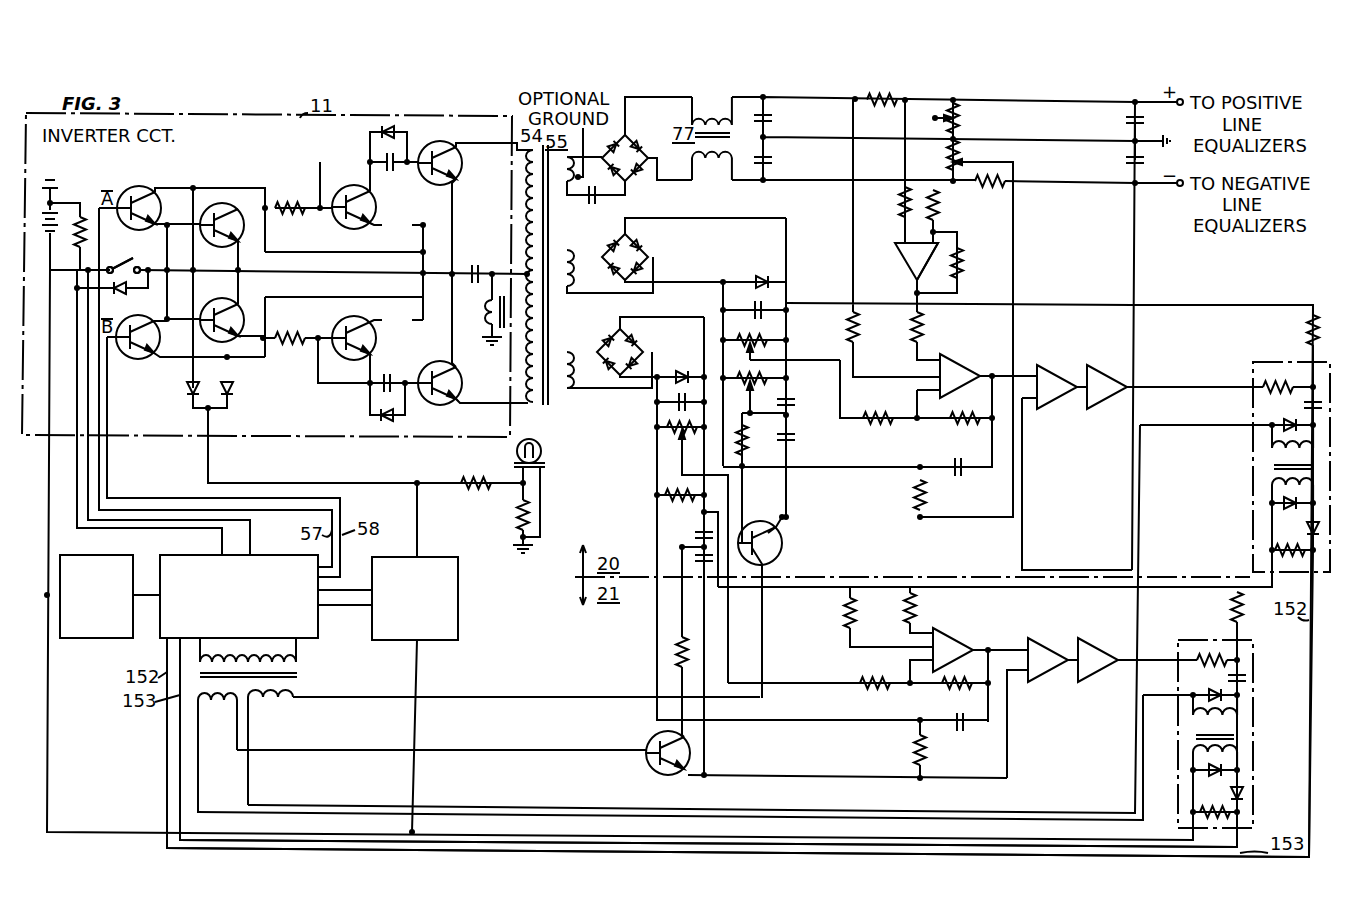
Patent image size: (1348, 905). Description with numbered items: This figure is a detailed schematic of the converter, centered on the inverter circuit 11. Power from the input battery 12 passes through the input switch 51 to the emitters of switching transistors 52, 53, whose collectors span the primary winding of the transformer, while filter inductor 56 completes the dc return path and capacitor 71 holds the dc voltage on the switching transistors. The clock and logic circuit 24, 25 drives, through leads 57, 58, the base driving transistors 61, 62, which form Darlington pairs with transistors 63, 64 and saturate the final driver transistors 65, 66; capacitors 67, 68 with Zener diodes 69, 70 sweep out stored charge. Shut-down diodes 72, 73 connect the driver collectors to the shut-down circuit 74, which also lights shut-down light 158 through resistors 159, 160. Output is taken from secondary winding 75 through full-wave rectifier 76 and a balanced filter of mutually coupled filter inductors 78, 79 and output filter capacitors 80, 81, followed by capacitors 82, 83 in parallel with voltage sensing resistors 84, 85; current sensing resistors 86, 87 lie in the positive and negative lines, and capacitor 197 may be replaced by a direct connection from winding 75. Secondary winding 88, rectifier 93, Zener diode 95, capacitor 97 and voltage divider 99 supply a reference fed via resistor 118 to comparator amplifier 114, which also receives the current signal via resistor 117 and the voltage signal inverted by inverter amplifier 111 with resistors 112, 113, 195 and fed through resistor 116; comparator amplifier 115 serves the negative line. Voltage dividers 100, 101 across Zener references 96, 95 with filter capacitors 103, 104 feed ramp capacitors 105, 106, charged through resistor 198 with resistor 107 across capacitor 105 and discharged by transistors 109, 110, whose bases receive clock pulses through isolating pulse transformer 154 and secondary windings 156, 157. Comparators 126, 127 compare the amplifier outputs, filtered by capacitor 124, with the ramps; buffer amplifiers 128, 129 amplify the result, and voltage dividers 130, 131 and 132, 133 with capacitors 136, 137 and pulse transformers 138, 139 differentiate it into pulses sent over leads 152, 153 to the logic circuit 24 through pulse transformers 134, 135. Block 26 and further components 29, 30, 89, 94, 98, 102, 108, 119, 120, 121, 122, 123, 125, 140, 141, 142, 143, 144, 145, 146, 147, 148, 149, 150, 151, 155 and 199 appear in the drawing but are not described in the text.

The inverter circuit 11 is at (537, 275).
The input battery 12 is at (42, 228).
The logic circuit 24 is at (205, 556).
The clock 25 is at (239, 596).
The soft start circuit 26 is at (98, 640).
The resistor 29 is at (82, 210).
The diode 30 is at (126, 296).
The input switch 51 is at (118, 265).
The switching transistor 52 is at (463, 163).
The switching transistor 53 is at (436, 406).
The filter inductor 56 is at (477, 322).
The lead 57 is at (215, 538).
The lead 58 is at (243, 537).
The transistor 61 is at (144, 186).
The transistor 62 is at (150, 360).
The transistor 63 is at (230, 204).
The transistor 64 is at (228, 300).
The final driver transistor 65 is at (380, 208).
The final driver transistor 66 is at (380, 340).
The capacitor 67 is at (392, 170).
The capacitor 68 is at (393, 370).
The Zener diode 69 is at (382, 130).
The Zener diode 70 is at (380, 418).
The capacitor 71 is at (480, 265).
The shut-down diode 72 is at (185, 394).
The shut-down diode 73 is at (236, 394).
The shut-down circuit 74 is at (458, 628).
The secondary winding 75 is at (572, 190).
The full-wave rectifier 76 is at (630, 140).
The filter inductor 78 is at (712, 108).
The filter inductor 79 is at (712, 175).
The output filter capacitor 80 is at (772, 118).
The output filter capacitor 81 is at (772, 160).
The capacitor 82 is at (1125, 120).
The capacitor 83 is at (1125, 160).
The output voltage sensing resistor 84 is at (965, 120).
The output voltage sensing resistor 85 is at (965, 155).
The positive line current sensing resistor 86 is at (880, 108).
The current sensing resistor 87 is at (992, 190).
The secondary winding 88 is at (573, 287).
The secondary winding 89 is at (576, 383).
The full-wave rectifier 93 is at (645, 250).
The rectifier bridge 94 is at (638, 343).
The Zener diode 95 is at (762, 276).
The Zener diode reference 96 is at (694, 362).
The capacitor 97 is at (750, 308).
The capacitor 98 is at (665, 400).
The voltage divider 99 is at (776, 336).
The voltage divider 100 is at (668, 430).
The voltage divider 101 is at (776, 380).
The resistor 102 is at (668, 490).
The filter capacitor 103 is at (795, 402).
The filter capacitor 104 is at (690, 525).
The capacitor 105 is at (795, 437).
The capacitor 106 is at (690, 558).
The resistor 107 is at (752, 445).
The resistor 108 is at (670, 655).
The transistor 109 is at (782, 550).
The transistor 110 is at (648, 770).
The inverter amplifier 111 is at (906, 262).
The resistor 112 is at (898, 205).
The resistor 113 is at (942, 210).
The comparator amplifier 114 is at (960, 365).
The comparator amplifier 115 is at (953, 635).
The resistor 116 is at (925, 318).
The resistor 117 is at (860, 320).
The resistor 118 is at (895, 408).
The resistor 119 is at (904, 605).
The resistor 120 is at (843, 612).
The resistor 121 is at (866, 678).
The resistor 122 is at (958, 425).
The resistor 123 is at (948, 690).
The filter capacitor 124 is at (960, 478).
The capacitor 125 is at (960, 733).
The comparator 126 is at (1062, 368).
The comparator 127 is at (1048, 680).
The buffer amplifier 128 is at (1102, 410).
The buffer amplifier 129 is at (1097, 680).
The voltage divider 130 is at (1300, 324).
The voltage divider 131 is at (1262, 382).
The voltage divider 132 is at (1228, 606).
The voltage divider 133 is at (1197, 658).
The pulse transformer 134 is at (1278, 362).
The pulse transformer 135 is at (1188, 640).
The capacitor 136 is at (1295, 408).
The capacitor 137 is at (1245, 675).
The pulse transformer 138 is at (1272, 466).
The pulse transformer 139 is at (1240, 735).
The primary winding 140 is at (1272, 452).
The secondary winding 141 is at (1272, 485).
The diode 142 is at (1275, 432).
The diode 143 is at (1280, 508).
The zener diode 144 is at (1300, 532).
The resistor 145 is at (1278, 555).
The primary winding 146 is at (1240, 710).
The secondary winding 147 is at (1238, 750).
The diode 148 is at (1205, 690).
The diode 149 is at (1222, 764).
The zener diode 150 is at (1245, 795).
The resistor 151 is at (1205, 808).
The lead 152 is at (740, 581).
The lead 153 is at (708, 742).
The isolating pulse transformer 154 is at (332, 691).
The primary winding 155 is at (300, 660).
The secondary winding 156 is at (218, 700).
The secondary winding 157 is at (272, 700).
The shut-down light 158 is at (541, 450).
The resistor 159 is at (466, 478).
The resistor 160 is at (515, 512).
The resistor 195 is at (967, 262).
The capacitor 197 is at (592, 202).
The resistor 198 is at (912, 493).
The resistor 199 is at (912, 748).